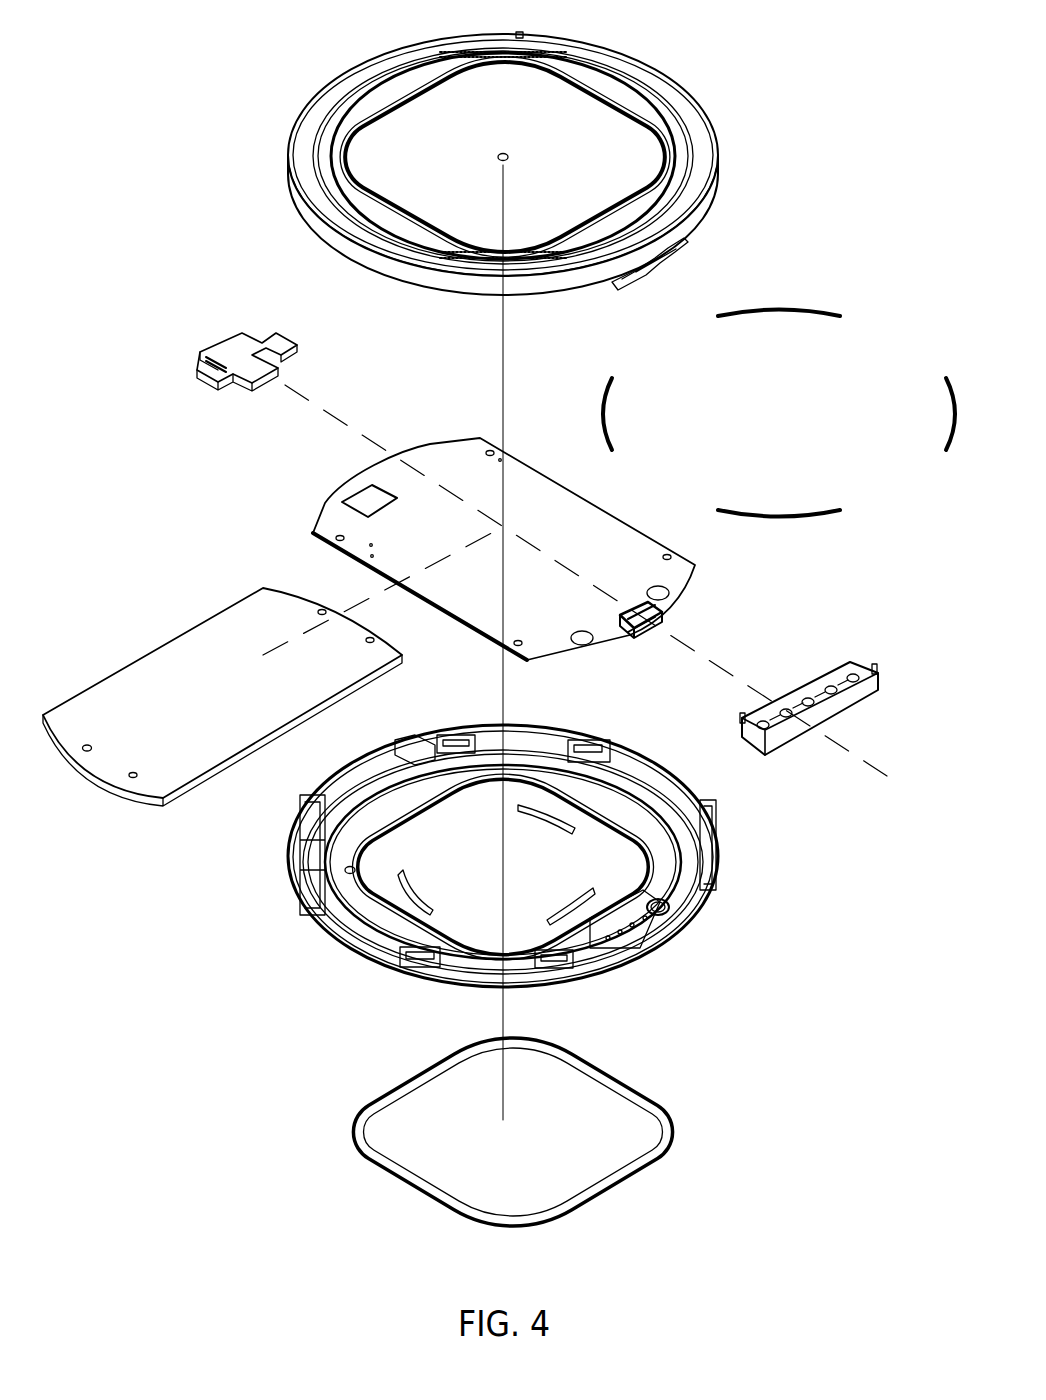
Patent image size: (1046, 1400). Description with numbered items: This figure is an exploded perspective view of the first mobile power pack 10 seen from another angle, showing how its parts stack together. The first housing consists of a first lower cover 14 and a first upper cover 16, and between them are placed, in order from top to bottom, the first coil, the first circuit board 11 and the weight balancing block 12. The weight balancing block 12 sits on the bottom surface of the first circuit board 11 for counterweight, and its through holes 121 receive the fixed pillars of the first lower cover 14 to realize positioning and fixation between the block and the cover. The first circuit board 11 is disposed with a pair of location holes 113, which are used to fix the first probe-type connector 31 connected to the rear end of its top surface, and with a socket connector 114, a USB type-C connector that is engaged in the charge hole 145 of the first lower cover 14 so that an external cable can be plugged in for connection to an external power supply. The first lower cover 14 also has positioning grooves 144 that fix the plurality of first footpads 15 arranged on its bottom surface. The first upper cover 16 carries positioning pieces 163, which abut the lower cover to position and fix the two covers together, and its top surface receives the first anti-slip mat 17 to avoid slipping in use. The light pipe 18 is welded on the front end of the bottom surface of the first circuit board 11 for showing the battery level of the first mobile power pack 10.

The first mobile power pack 10 is at (88, 77).
The first circuit board 11 is at (501, 570).
The location holes 113 is at (657, 595).
The socket connector 114 is at (653, 623).
The weight balancing block 12 is at (222, 725).
The through holes 121 is at (87, 745).
The first lower cover 14 is at (609, 163).
The positioning grooves 144 is at (690, 165).
The charge hole 145 is at (667, 250).
The first footpads 15 is at (828, 513).
The first upper cover 16 is at (549, 856).
The positioning pieces 163 is at (655, 918).
The first anti-slip mat 17 is at (667, 1131).
The light pipe 18 is at (237, 355).
The first probe-type connector 31 is at (827, 717).